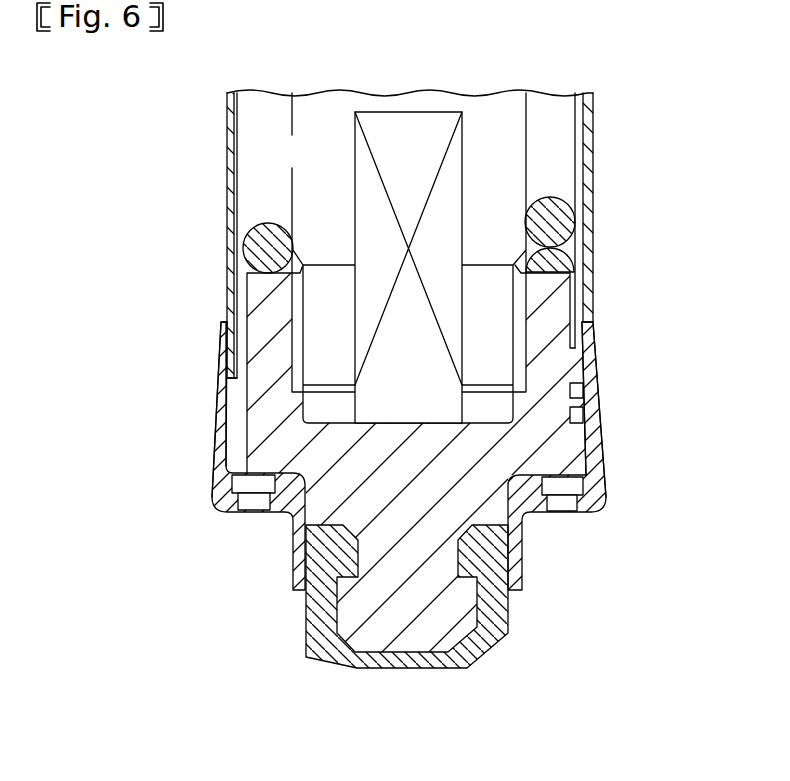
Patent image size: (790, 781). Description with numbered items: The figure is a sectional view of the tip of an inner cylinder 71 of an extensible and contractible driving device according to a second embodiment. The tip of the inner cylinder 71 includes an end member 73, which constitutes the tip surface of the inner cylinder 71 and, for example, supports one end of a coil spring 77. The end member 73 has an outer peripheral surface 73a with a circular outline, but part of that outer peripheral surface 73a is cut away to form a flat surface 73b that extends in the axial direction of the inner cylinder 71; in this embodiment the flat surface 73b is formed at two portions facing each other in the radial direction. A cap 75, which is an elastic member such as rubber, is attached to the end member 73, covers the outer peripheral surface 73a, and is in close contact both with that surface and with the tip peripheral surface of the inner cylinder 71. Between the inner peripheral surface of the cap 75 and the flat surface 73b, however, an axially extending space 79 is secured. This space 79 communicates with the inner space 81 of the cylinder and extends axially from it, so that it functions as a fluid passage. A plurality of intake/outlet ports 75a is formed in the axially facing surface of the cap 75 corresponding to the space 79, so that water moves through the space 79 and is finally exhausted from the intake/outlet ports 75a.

The inner cylinder 71 is at (592, 178).
The end member 73 is at (421, 507).
The outer peripheral surface 73a is at (583, 455).
The flat surface 73b is at (250, 447).
The cap 75 is at (622, 508).
The intake/outlet port 75a is at (260, 532).
The coil spring 77 is at (557, 227).
The space 79 is at (237, 402).
The inner space 81 is at (320, 165).